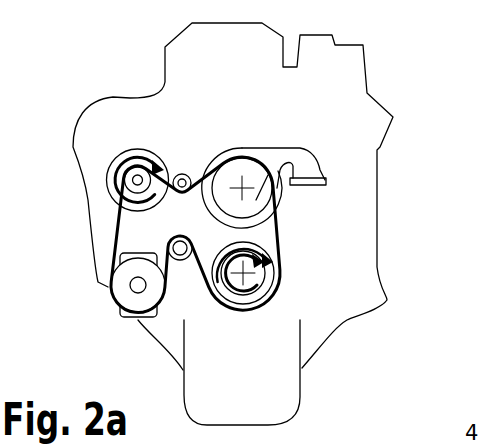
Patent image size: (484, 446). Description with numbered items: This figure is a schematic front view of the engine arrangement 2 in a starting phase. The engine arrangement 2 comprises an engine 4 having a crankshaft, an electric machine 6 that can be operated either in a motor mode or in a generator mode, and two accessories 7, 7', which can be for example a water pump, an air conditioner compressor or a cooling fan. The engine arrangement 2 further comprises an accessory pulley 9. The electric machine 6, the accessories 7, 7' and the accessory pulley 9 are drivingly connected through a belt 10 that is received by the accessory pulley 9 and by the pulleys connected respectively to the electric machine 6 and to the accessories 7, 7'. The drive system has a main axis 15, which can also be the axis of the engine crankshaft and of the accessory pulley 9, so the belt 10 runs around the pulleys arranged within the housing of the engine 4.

The engine arrangement 2 is at (387, 88).
The engine 4 is at (200, 75).
The electric machine 6 is at (122, 182).
The accessory 7 is at (310, 188).
The accessory 7' is at (125, 310).
The accessory pulley 9 is at (272, 287).
The belt 10 is at (281, 232).
The main axis 15 is at (227, 290).